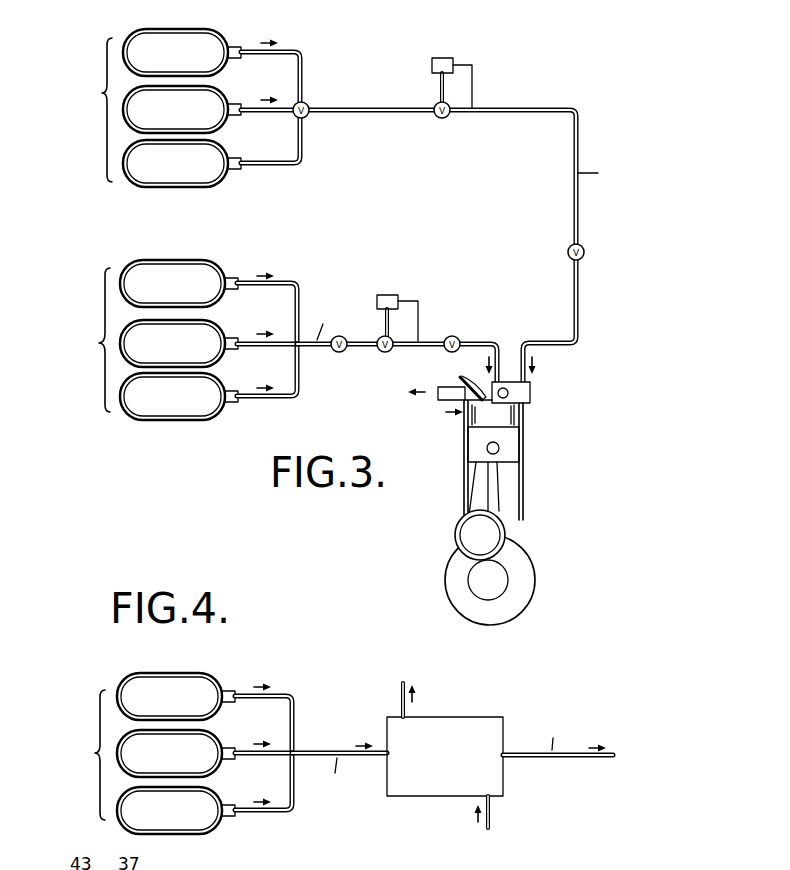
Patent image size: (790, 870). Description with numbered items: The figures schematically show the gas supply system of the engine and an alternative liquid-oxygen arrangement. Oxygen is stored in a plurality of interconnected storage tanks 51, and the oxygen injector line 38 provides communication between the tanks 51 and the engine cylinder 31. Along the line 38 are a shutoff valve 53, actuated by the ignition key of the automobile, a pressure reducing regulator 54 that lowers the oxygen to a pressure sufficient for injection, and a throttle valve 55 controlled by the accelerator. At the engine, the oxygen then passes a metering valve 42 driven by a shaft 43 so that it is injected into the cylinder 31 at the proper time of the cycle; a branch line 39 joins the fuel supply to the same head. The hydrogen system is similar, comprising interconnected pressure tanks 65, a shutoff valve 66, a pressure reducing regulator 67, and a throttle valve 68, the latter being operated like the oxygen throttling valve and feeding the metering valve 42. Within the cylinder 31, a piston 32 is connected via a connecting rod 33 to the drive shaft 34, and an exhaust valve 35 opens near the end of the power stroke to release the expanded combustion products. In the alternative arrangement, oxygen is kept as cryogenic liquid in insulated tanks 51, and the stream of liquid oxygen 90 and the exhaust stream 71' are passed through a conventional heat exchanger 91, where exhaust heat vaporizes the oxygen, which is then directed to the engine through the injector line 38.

In FIG. 3, the storage tanks 51 is at (103, 93).
In FIG. 4, the storage tanks 51 is at (98, 770).
In FIG. 3, the shutoff valve 53 is at (308, 104).
In FIG. 3, the pressure reducing regulator 54 is at (436, 105).
In FIG. 3, the throttle valve 55 is at (584, 252).
In FIG. 3, the oxygen injector line 38 is at (578, 318).
In FIG. 4, the oxygen injector line 38 is at (577, 759).
In FIG. 3, the pressure tanks 65 is at (103, 311).
In FIG. 3, the shutoff valve 66 is at (340, 353).
In FIG. 3, the pressure reducing regulator 67 is at (386, 353).
In FIG. 3, the throttle valve 68 is at (454, 336).
In FIG. 3, the fuel conduit 39 is at (486, 341).
In FIG. 3, the exhaust valve 35 is at (462, 379).
In FIG. 3, the shaft 43 is at (508, 393).
In FIG. 3, the metering valve 42 is at (530, 402).
In FIG. 3, the engine cylinder 31 is at (520, 418).
In FIG. 3, the piston 32 is at (468, 447).
In FIG. 3, the connecting rod 33 is at (485, 482).
In FIG. 3, the drive shaft 34 is at (475, 580).
In FIG. 4, the stream of liquid oxygen 90 is at (322, 750).
In FIG. 4, the heat exchanger 91 is at (440, 793).
In FIG. 4, the exhaust stream 71' is at (493, 831).